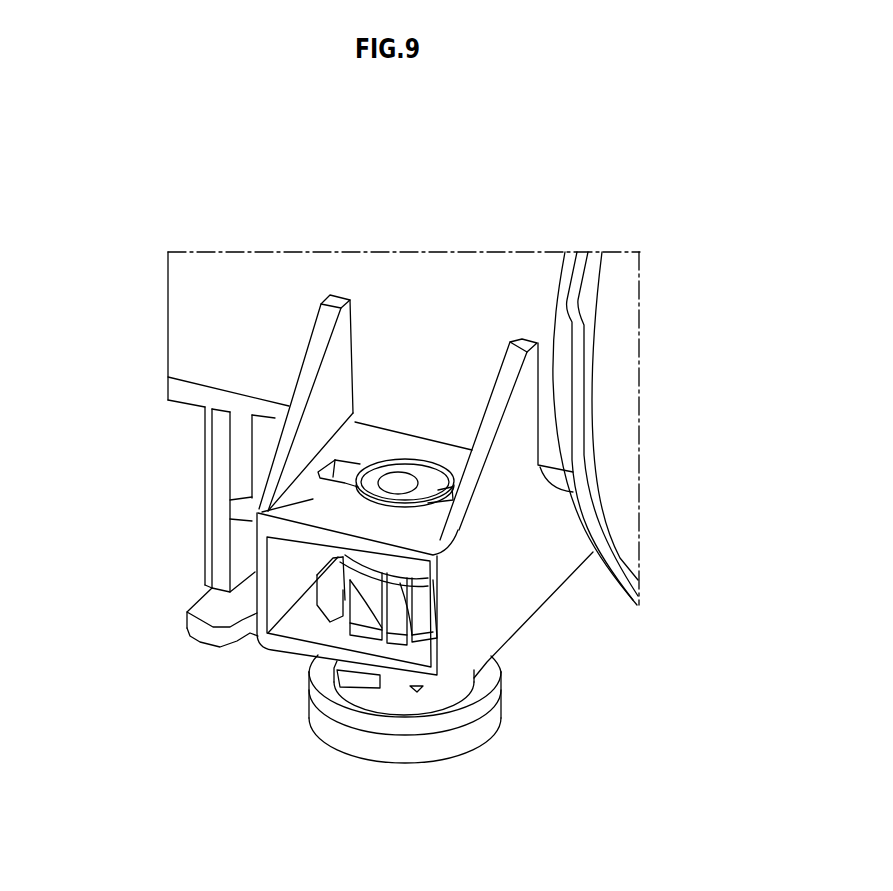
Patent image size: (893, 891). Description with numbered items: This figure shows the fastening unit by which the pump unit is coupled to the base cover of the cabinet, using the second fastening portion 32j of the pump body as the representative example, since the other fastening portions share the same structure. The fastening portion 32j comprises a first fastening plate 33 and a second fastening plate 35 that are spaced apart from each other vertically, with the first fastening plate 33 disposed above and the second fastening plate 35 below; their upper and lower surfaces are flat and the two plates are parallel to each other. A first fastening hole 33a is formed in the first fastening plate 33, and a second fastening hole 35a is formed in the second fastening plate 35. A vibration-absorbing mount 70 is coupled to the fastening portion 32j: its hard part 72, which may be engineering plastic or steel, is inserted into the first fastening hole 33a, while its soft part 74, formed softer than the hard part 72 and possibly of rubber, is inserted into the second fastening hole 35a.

The second fastening portion 32j is at (504, 588).
The first fastening plate 33 is at (277, 517).
The first fastening hole 33a is at (370, 470).
The second fastening plate 35 is at (288, 643).
The second fastening hole 35a is at (338, 628).
The mount 70 is at (502, 733).
The hard part 72 is at (360, 467).
The soft part 74 is at (383, 700).